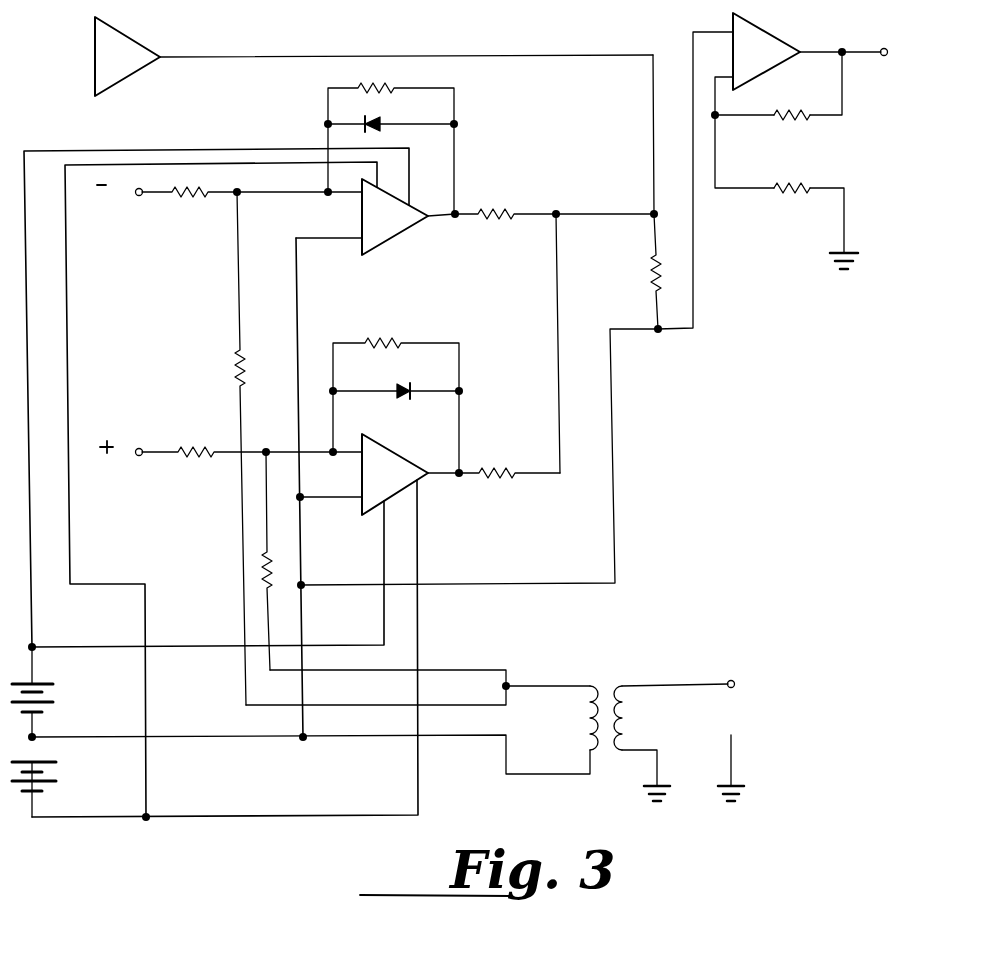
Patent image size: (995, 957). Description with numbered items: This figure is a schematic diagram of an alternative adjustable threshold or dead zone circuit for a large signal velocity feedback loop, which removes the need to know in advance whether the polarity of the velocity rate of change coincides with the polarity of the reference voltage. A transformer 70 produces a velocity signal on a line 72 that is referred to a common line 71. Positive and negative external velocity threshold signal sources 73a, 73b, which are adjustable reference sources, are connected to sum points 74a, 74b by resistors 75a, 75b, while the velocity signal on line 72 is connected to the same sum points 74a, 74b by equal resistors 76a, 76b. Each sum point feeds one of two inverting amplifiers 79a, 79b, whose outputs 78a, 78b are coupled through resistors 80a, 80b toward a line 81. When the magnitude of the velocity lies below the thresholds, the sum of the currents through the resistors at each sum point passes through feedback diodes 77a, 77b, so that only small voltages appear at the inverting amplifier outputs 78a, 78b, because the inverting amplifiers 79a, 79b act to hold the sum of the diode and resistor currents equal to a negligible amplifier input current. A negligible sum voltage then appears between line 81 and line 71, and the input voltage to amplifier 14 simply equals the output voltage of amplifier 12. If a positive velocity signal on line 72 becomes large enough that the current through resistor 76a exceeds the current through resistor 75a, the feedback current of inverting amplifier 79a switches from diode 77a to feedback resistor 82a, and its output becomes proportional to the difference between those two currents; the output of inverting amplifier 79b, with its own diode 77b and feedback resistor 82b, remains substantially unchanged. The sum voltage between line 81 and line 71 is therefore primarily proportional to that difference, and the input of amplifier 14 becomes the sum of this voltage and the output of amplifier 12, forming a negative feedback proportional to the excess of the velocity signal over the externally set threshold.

The amplifier 12 is at (130, 67).
The amplifier 14 is at (773, 45).
The transformer 70 is at (685, 673).
The common line 71 is at (539, 775).
The line 72 is at (557, 684).
The positive external velocity threshold signal source 73a is at (139, 196).
The negative external velocity threshold signal source 73b is at (139, 456).
The sum point 74a is at (241, 196).
The sum point 74b is at (268, 448).
The resistor 75a is at (188, 188).
The resistor 75b is at (200, 448).
The resistor 76a is at (238, 352).
The resistor 76b is at (272, 560).
The diode 77a is at (380, 122).
The diode 77b is at (397, 388).
The inverting amplifier output 78a is at (458, 210).
The inverting amplifier output 78b is at (462, 470).
The inverting amplifier 79a is at (398, 220).
The inverting amplifier 79b is at (413, 476).
The output resistor 80a is at (508, 209).
The output resistor 80b is at (507, 475).
The line 81 is at (652, 208).
The resistor 82a is at (352, 88).
The resistor 82b is at (396, 342).